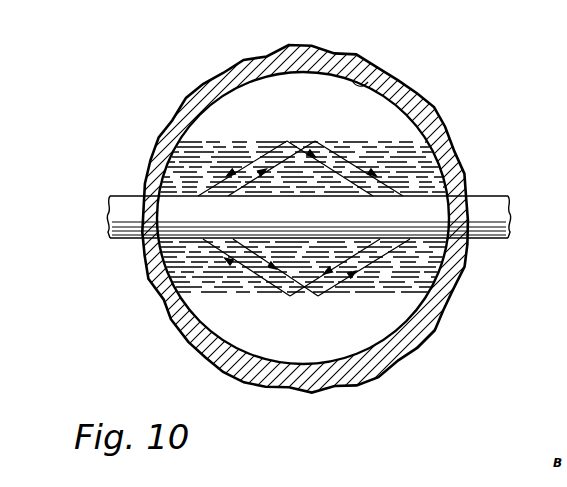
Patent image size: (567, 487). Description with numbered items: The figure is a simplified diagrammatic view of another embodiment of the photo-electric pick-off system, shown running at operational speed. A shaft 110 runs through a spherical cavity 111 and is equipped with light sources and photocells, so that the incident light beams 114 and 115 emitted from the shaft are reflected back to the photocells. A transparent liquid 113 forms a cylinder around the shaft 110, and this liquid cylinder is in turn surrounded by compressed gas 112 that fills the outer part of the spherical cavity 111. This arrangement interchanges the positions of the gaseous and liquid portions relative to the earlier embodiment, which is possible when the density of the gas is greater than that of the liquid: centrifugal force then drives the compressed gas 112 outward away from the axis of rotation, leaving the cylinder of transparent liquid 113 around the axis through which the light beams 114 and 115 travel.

The shaft 110 is at (498, 197).
The spherical cavity 111 is at (374, 70).
The compressed gas 112 is at (399, 127).
The transparent liquid 113 is at (192, 170).
The incident light beam 114 is at (340, 165).
The incident light beam 115 is at (288, 155).